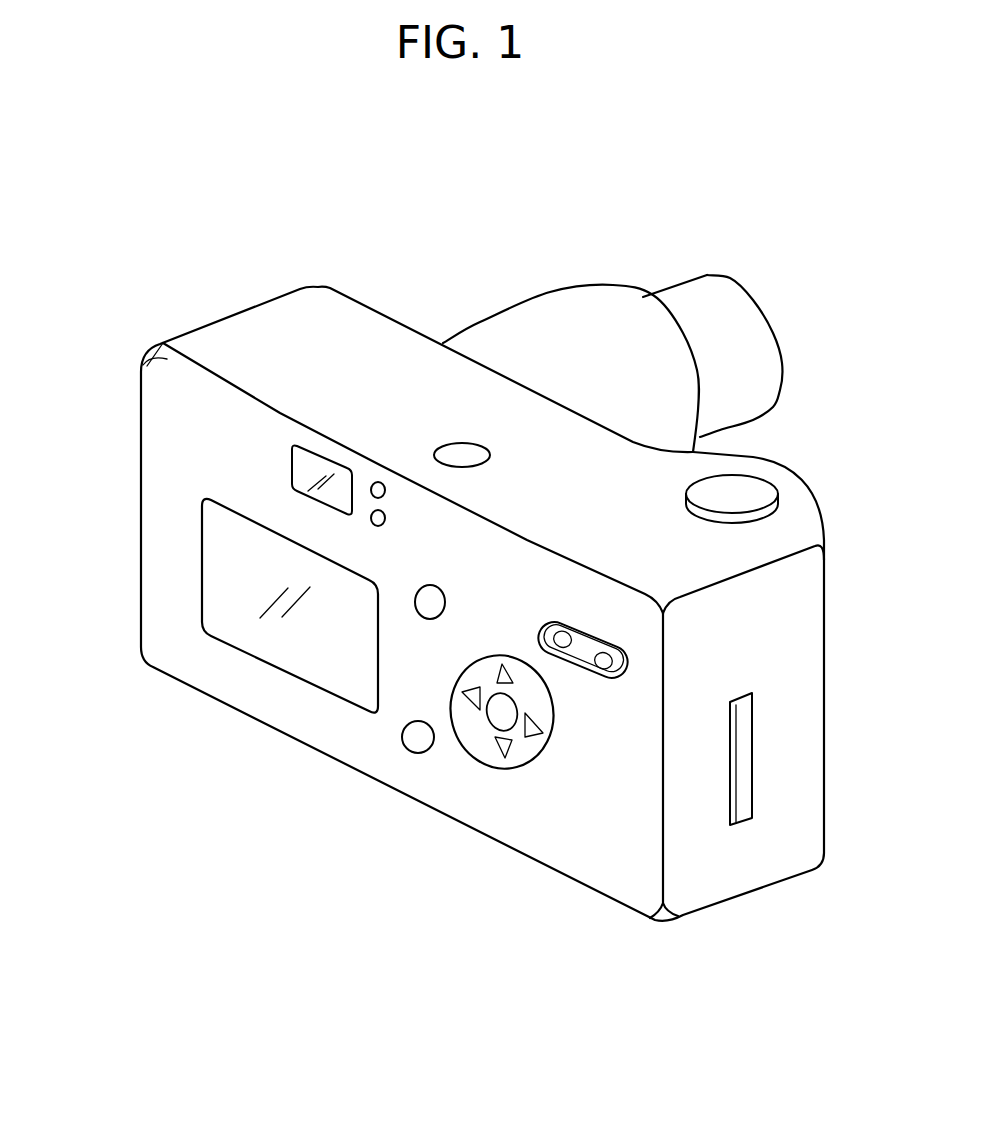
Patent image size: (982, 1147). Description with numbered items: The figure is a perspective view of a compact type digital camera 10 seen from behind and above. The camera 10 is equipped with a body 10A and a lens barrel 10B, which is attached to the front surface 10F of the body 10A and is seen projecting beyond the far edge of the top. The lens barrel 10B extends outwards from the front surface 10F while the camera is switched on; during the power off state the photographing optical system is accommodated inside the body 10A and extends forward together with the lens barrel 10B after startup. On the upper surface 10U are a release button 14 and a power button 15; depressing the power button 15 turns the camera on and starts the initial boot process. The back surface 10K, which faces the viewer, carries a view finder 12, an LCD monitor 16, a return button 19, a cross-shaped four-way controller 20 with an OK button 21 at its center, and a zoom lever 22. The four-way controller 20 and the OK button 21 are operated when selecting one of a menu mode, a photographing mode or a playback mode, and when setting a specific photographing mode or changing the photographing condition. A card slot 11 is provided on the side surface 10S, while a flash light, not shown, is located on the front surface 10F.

The digital camera 10 is at (165, 266).
The body 10A is at (183, 325).
The back surface 10K is at (173, 413).
The upper surface 10U is at (282, 330).
The front surface 10F is at (373, 303).
The lens barrel 10B is at (568, 292).
The side surface 10S is at (745, 852).
The card slot 11 is at (753, 765).
The view finder 12 is at (307, 465).
The release button 14 is at (733, 493).
The power button 15 is at (463, 455).
The LCD monitor 16 is at (237, 577).
The return button 19 is at (400, 740).
The cross-shaped four-way controller 20 is at (477, 757).
The OK button 21 is at (513, 733).
The zoom lever 22 is at (590, 675).